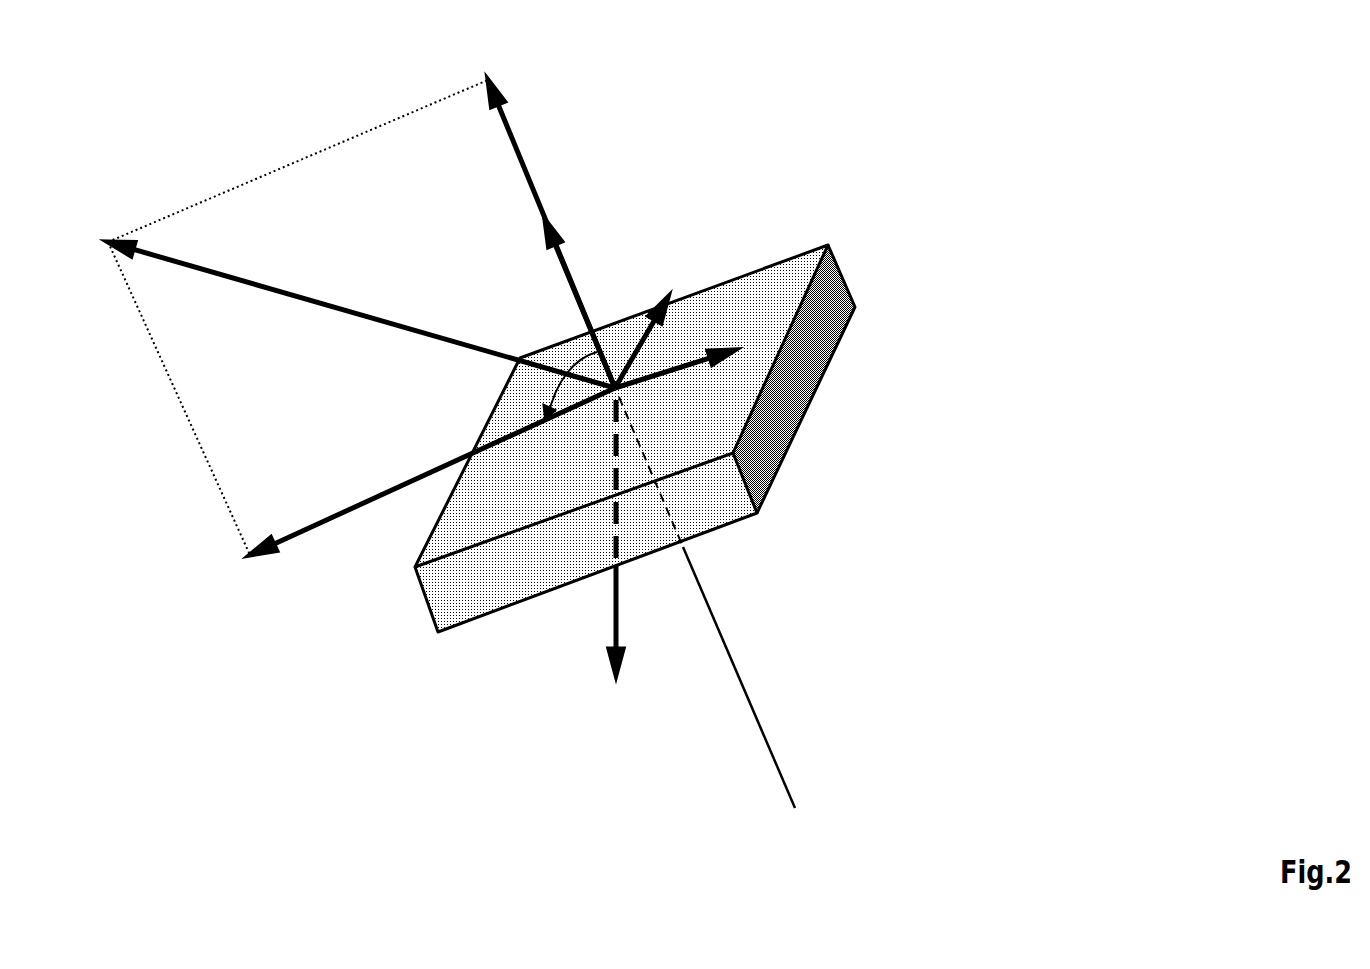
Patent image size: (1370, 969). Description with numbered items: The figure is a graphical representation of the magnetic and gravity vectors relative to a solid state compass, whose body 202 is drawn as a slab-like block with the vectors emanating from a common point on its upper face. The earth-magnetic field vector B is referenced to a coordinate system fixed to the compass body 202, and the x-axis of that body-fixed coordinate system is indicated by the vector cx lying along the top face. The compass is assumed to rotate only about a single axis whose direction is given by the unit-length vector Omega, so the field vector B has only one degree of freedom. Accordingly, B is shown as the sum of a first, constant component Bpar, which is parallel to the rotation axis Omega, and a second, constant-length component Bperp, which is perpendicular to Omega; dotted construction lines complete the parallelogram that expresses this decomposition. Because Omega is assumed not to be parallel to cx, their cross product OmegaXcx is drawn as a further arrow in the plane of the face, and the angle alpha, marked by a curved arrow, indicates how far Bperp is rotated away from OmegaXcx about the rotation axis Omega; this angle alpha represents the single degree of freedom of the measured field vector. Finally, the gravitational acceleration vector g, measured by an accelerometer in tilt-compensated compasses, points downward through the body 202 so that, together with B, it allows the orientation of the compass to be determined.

The body of the solid state compass 202 is at (790, 363).
The earth-magnetic field vector B is at (178, 268).
The first constant component parallel to rotation axis Bpar is at (507, 118).
The second constant-length component perpendicular to rotation axis Bperp is at (323, 518).
The rotation axis unit vector Omega is at (573, 282).
The cross product of rotation axis and x-axis vector OmegaXcx is at (572, 378).
The x-axis vector of compass coordinate system cx is at (658, 380).
The earth's gravitational acceleration vector g is at (615, 623).
The rotation angle alpha is at (552, 388).